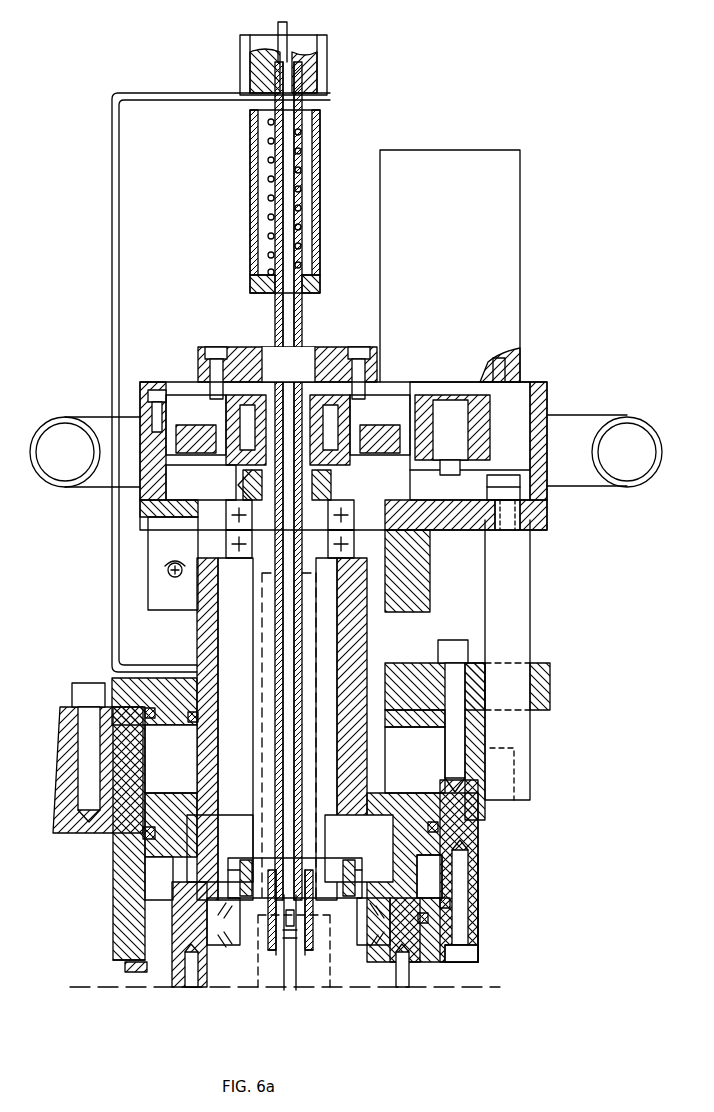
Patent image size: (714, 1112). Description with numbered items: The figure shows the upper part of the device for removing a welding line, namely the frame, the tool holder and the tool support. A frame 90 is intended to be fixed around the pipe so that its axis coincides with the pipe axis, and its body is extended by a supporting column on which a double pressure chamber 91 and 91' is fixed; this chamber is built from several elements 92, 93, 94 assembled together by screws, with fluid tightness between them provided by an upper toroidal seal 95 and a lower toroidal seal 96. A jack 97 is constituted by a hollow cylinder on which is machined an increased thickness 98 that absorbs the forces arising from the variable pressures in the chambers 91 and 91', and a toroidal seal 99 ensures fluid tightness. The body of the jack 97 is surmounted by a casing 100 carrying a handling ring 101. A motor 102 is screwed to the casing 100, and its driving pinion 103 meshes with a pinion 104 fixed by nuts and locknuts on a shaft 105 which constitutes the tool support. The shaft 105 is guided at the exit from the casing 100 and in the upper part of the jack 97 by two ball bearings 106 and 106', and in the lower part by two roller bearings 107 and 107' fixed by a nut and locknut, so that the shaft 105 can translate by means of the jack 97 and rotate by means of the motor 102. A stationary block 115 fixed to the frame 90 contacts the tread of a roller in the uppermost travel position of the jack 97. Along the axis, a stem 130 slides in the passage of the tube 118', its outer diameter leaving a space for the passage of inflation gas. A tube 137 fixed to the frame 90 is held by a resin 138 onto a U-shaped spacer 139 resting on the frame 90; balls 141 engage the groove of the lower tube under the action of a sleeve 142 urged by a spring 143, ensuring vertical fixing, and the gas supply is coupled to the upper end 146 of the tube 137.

The frame 90 is at (44, 775).
The upper pressure chamber 91 is at (445, 730).
The lower pressure chamber 91' is at (461, 876).
The chamber element 92 is at (438, 955).
The chamber element 93 is at (548, 692).
The chamber element 94 is at (480, 914).
The upper toroidal seal 95 is at (192, 712).
The lower toroidal seal 96 is at (470, 949).
The jack 97 is at (207, 637).
The increased thickness 98 is at (150, 845).
The toroidal seal 99 is at (145, 832).
The casing 100 is at (147, 466).
The handling ring 101 is at (58, 440).
The motor 102 is at (521, 248).
The driving pinion 103 is at (488, 443).
The pinion 104 is at (259, 373).
The shaft 105 is at (243, 486).
The ball bearing 106 is at (251, 518).
The ball bearing 106' is at (251, 563).
The roller bearing 107 is at (245, 901).
The roller bearing 107' is at (274, 980).
The stationary block 115 is at (128, 972).
The tube 118' is at (308, 967).
The stem 130 is at (292, 990).
The tube 137 is at (290, 650).
The resin 138 is at (252, 72).
The U-shaped spacer 139 is at (112, 155).
The balls 141 is at (272, 945).
The sleeve 142 is at (273, 312).
The spring 143 is at (270, 158).
The upper end 146 is at (279, 26).